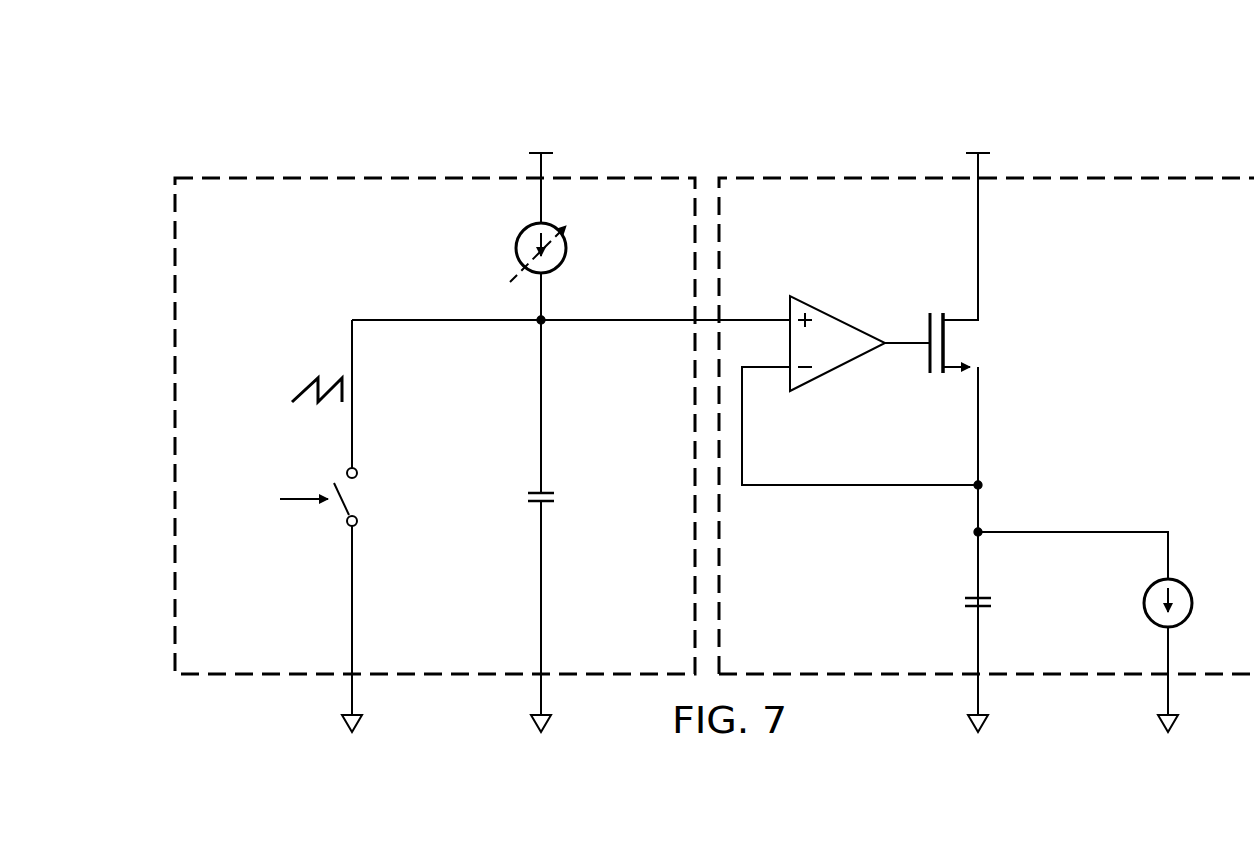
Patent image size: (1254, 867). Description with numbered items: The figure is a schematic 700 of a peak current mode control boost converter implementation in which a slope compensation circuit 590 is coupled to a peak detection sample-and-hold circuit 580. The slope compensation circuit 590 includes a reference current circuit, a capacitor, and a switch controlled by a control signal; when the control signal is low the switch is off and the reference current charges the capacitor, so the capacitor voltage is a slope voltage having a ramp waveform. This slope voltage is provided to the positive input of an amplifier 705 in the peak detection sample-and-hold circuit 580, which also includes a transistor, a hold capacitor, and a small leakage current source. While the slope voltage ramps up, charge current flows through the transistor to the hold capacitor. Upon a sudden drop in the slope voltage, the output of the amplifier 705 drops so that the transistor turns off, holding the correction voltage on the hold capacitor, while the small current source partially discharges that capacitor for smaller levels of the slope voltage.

The power converter control circuit 700 is at (596, 88).
The slope compensation circuit 590 is at (375, 175).
The peak detection sample-and-hold circuit 580 is at (1062, 175).
The amplifier 705 is at (835, 318).